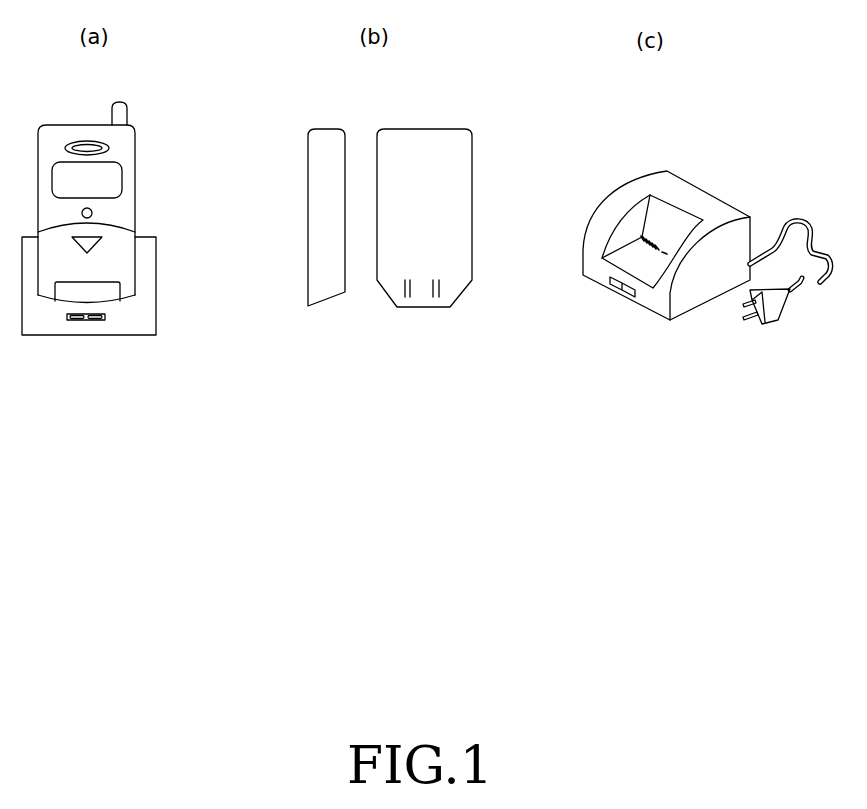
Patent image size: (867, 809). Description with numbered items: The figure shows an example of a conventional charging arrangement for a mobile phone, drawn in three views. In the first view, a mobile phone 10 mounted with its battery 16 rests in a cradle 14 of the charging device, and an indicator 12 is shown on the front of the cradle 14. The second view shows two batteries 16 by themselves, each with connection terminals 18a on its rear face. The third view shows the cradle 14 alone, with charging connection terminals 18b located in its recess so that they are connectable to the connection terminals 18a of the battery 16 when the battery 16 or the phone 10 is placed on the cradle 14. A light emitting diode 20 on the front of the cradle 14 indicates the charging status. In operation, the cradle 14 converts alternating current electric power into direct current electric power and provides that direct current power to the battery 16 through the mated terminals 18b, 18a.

The mobile phone 10 is at (122, 140).
The charging indicator 12 is at (77, 320).
The cradle 14 is at (142, 320).
The battery 16 is at (327, 137).
The connection terminals 18a is at (427, 306).
The charging connection terminals 18b is at (641, 236).
The light emitting diode (LED) 20 is at (616, 291).